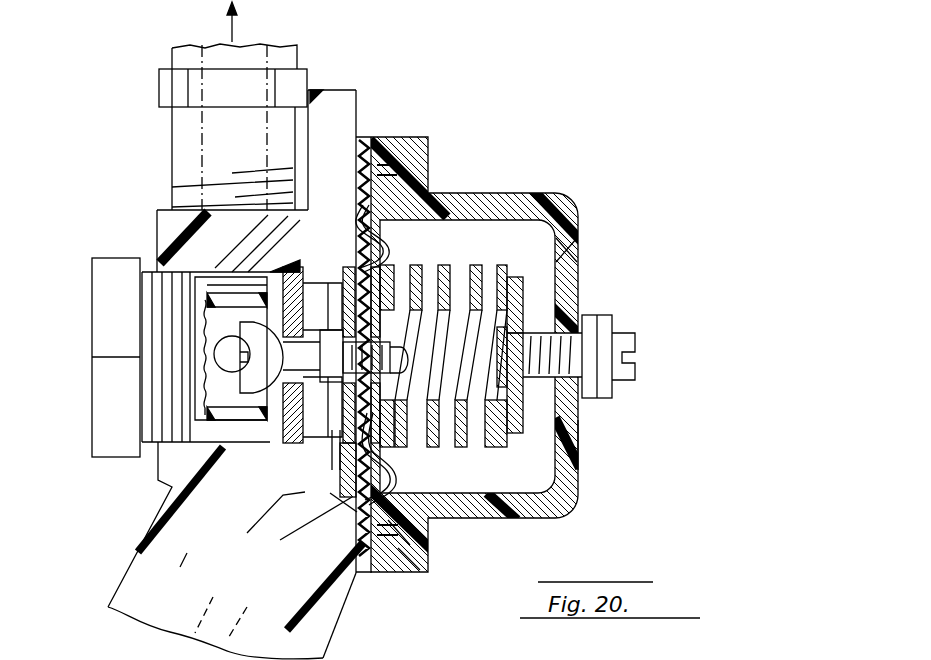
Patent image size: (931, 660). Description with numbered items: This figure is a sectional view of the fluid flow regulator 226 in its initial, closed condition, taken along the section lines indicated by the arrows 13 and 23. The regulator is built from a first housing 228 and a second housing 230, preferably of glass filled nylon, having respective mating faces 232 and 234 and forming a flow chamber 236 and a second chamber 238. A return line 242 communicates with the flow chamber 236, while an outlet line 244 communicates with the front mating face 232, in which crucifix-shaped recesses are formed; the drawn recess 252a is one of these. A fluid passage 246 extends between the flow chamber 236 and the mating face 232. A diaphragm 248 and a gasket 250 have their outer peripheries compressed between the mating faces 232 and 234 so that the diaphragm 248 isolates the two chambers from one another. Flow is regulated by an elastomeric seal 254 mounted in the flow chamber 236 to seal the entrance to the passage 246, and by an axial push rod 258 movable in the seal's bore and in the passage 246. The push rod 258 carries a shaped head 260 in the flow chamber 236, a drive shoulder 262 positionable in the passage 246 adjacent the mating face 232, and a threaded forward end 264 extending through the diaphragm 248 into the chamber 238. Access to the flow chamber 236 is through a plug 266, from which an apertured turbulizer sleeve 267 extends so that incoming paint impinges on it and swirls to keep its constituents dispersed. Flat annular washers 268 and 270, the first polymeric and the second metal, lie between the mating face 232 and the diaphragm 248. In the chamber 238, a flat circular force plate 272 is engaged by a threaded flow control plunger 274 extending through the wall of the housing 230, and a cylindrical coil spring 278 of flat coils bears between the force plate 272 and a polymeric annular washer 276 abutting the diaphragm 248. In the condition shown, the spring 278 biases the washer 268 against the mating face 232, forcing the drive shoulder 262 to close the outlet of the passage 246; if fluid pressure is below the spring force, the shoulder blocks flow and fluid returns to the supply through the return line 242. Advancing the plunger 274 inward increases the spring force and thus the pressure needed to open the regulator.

The section line 13 is at (356, 170).
The section line 23 is at (356, 530).
The flow regulator 226 is at (421, 126).
The first housing 228 is at (160, 213).
The second housing 230 is at (425, 150).
The mating face 232 is at (358, 96).
The mating face 234 is at (358, 140).
The flow chamber 236 is at (185, 398).
The chamber 238 is at (533, 448).
The return line 242 is at (180, 130).
The outlet line 244 is at (247, 553).
The fluid passage 246 is at (330, 437).
The diaphragm 248 is at (393, 497).
The gasket 250 is at (378, 557).
The wall 252a is at (297, 493).
The elastomeric seal 254 is at (305, 438).
The push rod 258 is at (213, 393).
The shaped head 260 is at (275, 273).
The drive shoulder 262 is at (323, 300).
The threaded forward end 264 is at (443, 447).
The plug 266 is at (123, 257).
The turbulizer sleeve 267 is at (233, 318).
The annular washer 268 is at (334, 230).
The annular washer 270 is at (363, 283).
The force plate 272 is at (520, 262).
The flow control plunger 274 is at (520, 302).
The annular washer 276 is at (395, 290).
The coil spring 278 is at (493, 445).